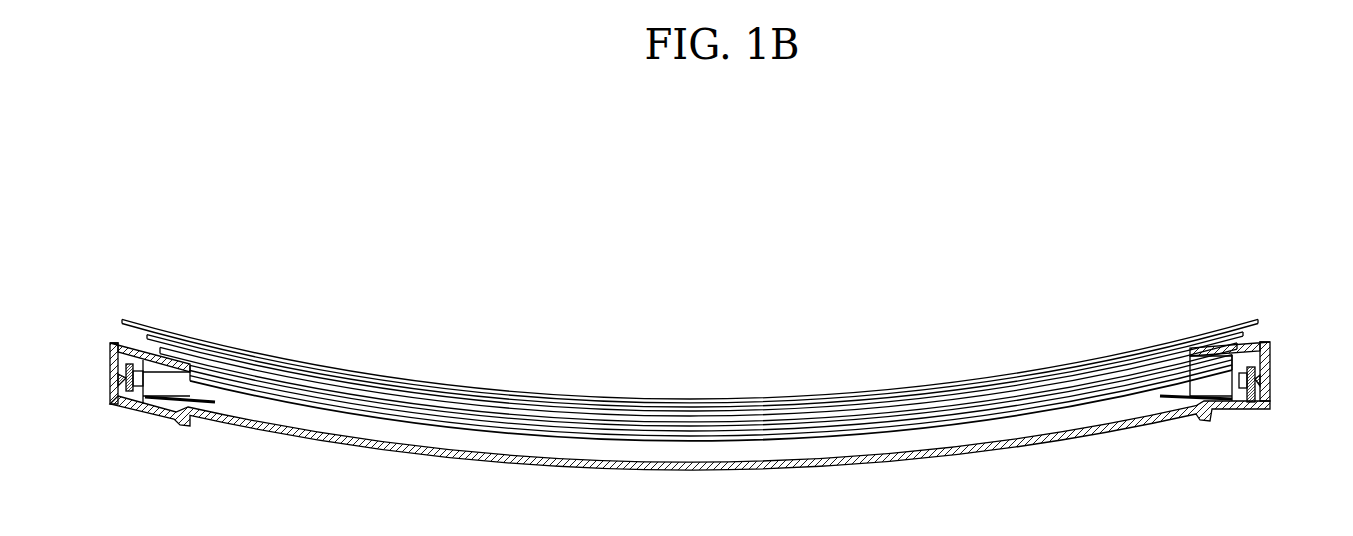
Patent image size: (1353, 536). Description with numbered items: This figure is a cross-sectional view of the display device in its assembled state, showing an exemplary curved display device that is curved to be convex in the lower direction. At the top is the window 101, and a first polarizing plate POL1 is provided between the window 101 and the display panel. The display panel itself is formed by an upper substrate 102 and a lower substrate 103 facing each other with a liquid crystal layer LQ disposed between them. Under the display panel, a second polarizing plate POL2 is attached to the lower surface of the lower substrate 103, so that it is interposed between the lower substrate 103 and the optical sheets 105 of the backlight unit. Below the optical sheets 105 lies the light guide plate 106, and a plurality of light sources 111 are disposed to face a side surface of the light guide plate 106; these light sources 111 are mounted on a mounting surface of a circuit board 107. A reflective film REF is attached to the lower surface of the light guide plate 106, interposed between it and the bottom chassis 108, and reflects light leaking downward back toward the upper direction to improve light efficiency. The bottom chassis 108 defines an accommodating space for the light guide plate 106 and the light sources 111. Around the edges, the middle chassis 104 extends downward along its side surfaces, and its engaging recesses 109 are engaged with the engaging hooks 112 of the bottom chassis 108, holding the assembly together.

The window 101 is at (667, 402).
The upper substrate 102 is at (762, 407).
The lower substrate 103 is at (842, 413).
The middle chassis 104 is at (1268, 352).
The optical sheets 105 is at (613, 428).
The light guide plate 106 is at (1120, 405).
The circuit board 107 is at (1262, 393).
The bottom chassis 108 is at (1205, 416).
The engaging recesses 109 is at (1270, 376).
The light sources 111 is at (1243, 395).
The engaging hooks 112 is at (1270, 384).
The first polarizing plate POL1 is at (713, 402).
The second polarizing plate POL2 is at (892, 415).
The liquid crystal layer LQ is at (802, 408).
The reflective film REF is at (1165, 413).